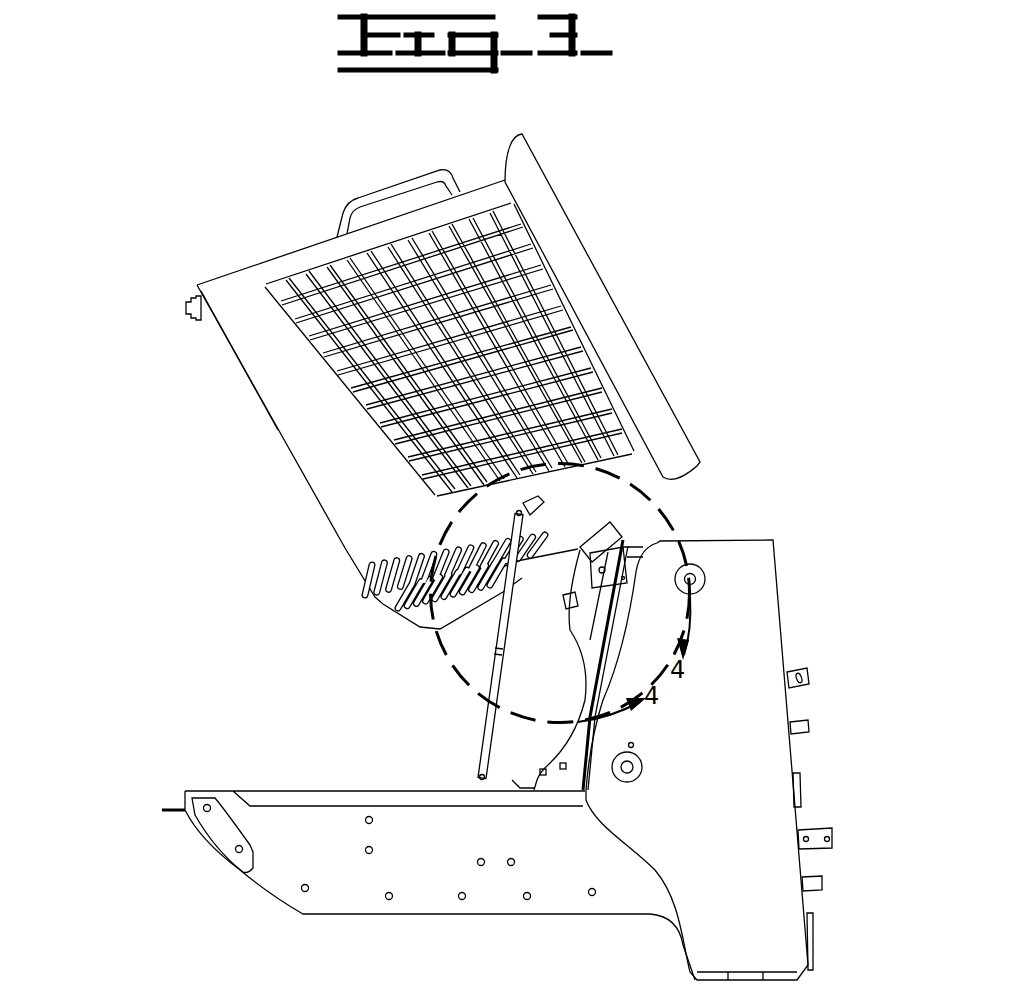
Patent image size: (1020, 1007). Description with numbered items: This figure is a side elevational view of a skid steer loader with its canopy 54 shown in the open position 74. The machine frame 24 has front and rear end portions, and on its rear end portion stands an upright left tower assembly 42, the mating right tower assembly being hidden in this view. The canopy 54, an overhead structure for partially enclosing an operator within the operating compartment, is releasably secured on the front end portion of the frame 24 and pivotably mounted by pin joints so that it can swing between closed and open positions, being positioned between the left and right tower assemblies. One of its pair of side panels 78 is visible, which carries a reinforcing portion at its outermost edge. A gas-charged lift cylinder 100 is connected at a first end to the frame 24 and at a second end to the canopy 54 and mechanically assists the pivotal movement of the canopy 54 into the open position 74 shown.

The machine frame 24 is at (420, 877).
The left tower assembly 42 is at (778, 600).
The canopy 54 is at (643, 357).
The open position 74 is at (165, 437).
The side panel 78 is at (352, 462).
The gas-charged lift cylinder 100 is at (485, 745).